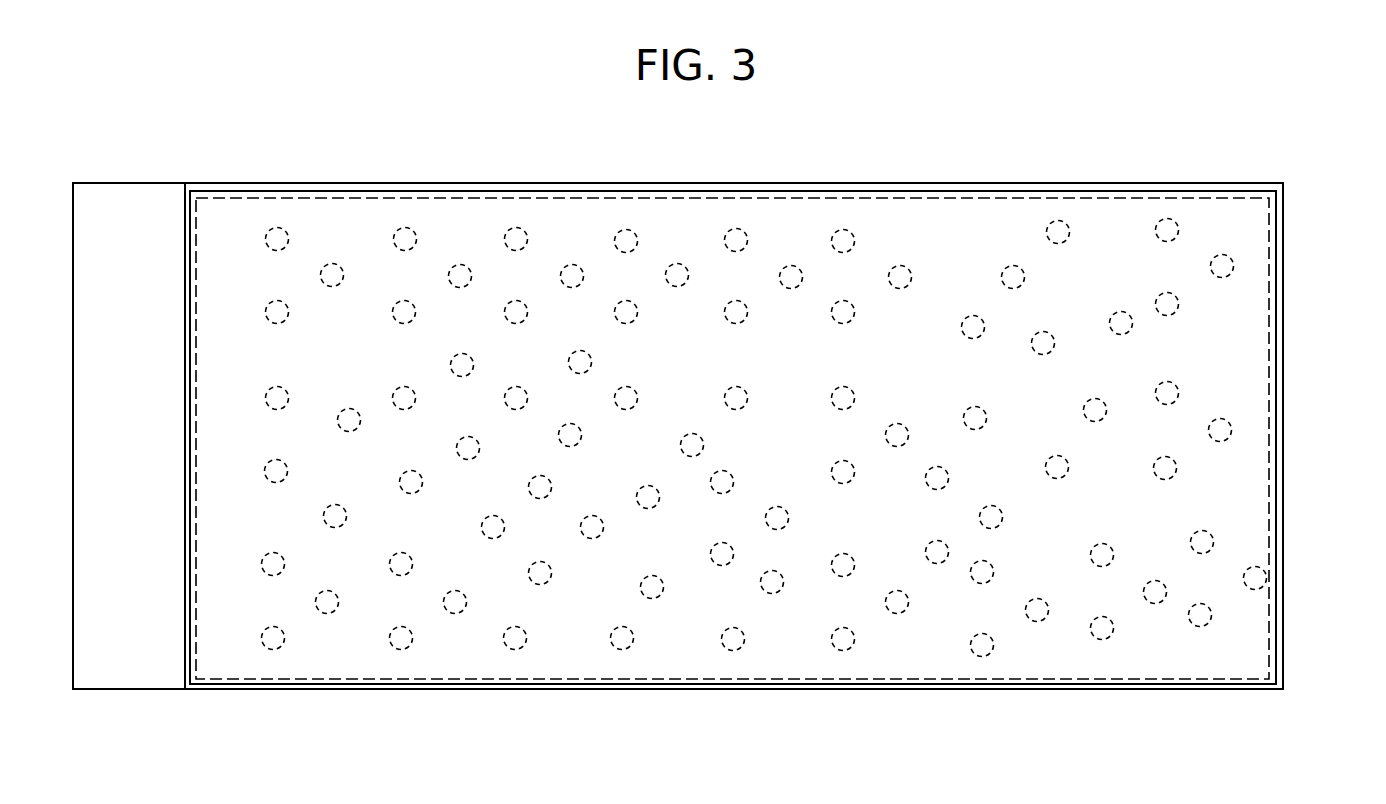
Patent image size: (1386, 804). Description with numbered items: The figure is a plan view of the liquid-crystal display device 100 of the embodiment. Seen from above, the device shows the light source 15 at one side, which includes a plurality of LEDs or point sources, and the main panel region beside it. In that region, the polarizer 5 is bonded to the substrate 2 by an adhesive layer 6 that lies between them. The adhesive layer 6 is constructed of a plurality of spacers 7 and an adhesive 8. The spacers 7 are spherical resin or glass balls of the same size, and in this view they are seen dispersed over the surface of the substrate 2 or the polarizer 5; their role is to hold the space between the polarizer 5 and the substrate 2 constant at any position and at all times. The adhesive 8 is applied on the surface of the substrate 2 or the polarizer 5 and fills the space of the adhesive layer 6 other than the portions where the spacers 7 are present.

The liquid-crystal display device 100 is at (717, 123).
The substrate 2 is at (1282, 556).
The polarizer 5 is at (1276, 281).
The adhesive layer 6 is at (1270, 395).
The spacers 7 is at (1224, 434).
The adhesive 8 is at (1228, 507).
The light source 15 is at (145, 672).